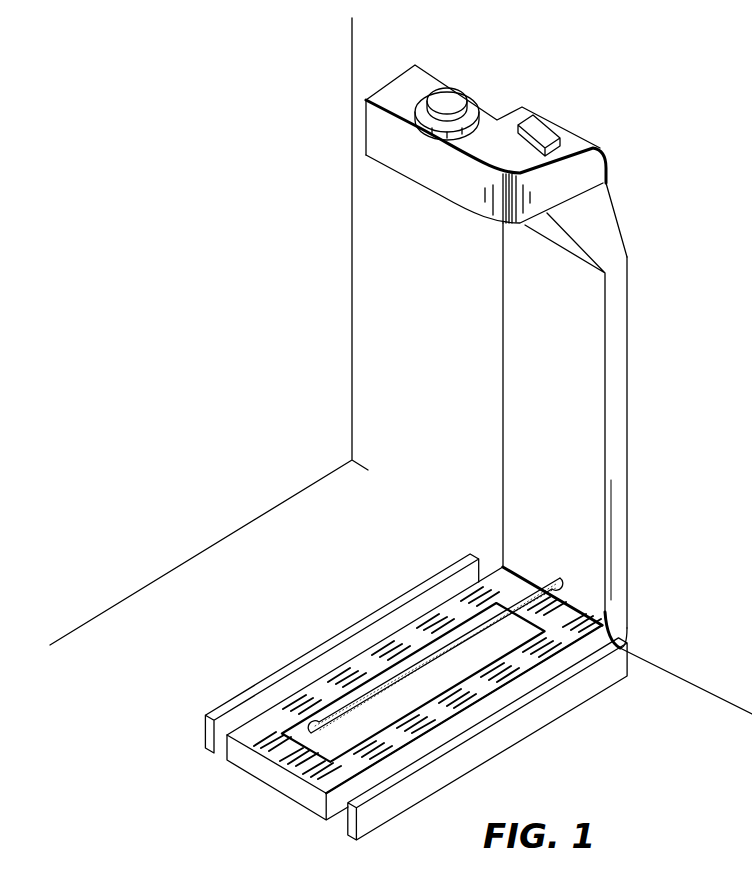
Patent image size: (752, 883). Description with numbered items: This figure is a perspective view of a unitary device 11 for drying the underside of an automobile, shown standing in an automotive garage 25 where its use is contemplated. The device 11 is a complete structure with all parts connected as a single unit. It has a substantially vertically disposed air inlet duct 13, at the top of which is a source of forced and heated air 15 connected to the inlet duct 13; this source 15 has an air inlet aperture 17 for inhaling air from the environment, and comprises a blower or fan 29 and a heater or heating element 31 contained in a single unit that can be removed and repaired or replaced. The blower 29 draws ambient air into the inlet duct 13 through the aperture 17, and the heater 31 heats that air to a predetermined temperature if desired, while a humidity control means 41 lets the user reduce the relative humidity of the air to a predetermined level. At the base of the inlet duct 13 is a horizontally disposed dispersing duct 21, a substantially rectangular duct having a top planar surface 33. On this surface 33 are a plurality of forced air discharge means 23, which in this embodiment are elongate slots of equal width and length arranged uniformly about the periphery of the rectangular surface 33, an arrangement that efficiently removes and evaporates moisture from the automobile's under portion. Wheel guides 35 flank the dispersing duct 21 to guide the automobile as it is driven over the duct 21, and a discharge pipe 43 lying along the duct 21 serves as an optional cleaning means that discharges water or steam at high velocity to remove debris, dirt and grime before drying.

The unitary device 11 is at (652, 420).
The air inlet duct 13 is at (568, 379).
The source of forced and heated air 15 is at (417, 88).
The air inlet aperture 17 is at (396, 80).
The dispersing duct 21 is at (512, 675).
The forced air discharge means 23 is at (513, 675).
The automotive garage 25 is at (285, 311).
The blower 29 is at (452, 100).
The heater 31 is at (463, 103).
The top planar surface 33 is at (428, 703).
The wheel guides 35 is at (206, 746).
The humidity control means 41 is at (560, 138).
The discharge pipe 43 is at (549, 577).